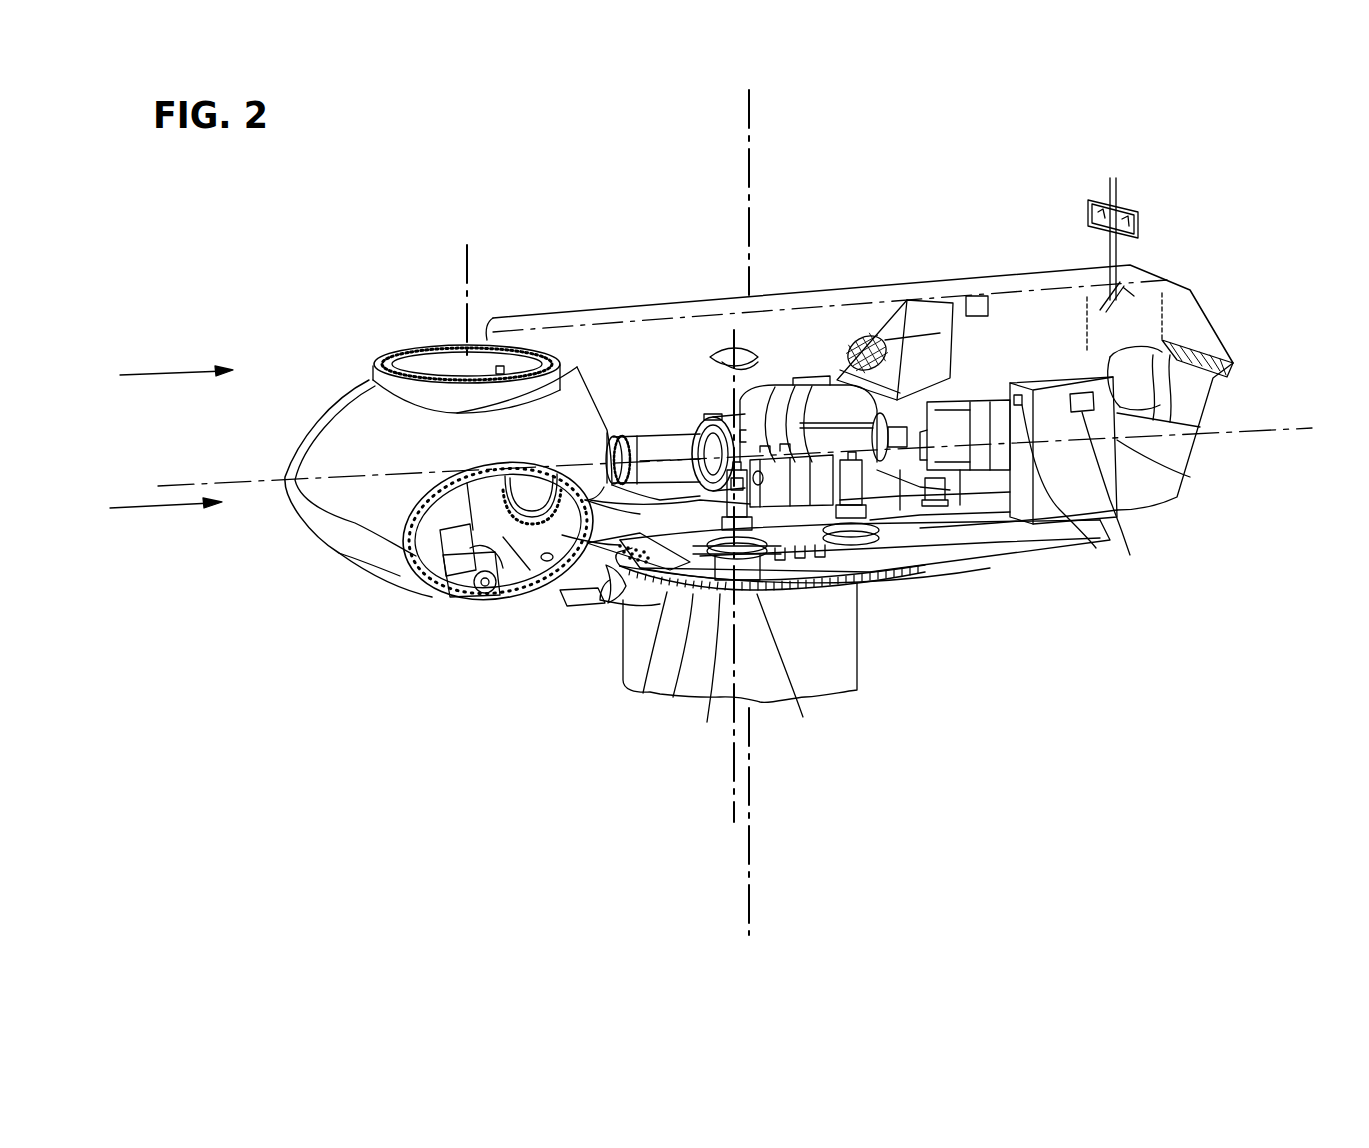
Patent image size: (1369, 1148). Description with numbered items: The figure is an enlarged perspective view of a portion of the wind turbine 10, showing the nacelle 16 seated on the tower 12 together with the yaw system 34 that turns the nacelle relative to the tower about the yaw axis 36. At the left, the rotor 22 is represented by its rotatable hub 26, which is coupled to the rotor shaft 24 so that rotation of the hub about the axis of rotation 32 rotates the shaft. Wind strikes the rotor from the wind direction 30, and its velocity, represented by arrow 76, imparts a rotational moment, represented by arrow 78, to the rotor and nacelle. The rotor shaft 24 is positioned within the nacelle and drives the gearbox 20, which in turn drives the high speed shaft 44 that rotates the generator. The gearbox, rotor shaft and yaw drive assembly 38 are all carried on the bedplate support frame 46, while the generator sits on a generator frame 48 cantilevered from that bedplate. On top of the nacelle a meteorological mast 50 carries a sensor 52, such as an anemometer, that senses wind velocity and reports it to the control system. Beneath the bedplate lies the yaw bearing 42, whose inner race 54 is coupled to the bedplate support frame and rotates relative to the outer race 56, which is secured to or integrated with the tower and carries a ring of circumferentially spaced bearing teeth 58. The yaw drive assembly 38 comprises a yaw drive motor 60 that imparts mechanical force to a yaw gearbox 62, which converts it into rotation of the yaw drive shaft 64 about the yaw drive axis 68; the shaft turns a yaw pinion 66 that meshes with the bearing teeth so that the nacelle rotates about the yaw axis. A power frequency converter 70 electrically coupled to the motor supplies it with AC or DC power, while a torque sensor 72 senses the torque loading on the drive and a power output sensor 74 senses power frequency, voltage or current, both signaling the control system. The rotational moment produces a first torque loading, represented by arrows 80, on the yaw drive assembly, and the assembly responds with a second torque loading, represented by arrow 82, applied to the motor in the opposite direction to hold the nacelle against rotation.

The wind turbine 10 is at (622, 242).
The tower 12 is at (862, 666).
The nacelle 16 is at (873, 292).
The gearbox 20 is at (812, 378).
The rotor 22 is at (318, 334).
The rotor shaft 24 is at (640, 428).
The hub 26 is at (356, 563).
The wind direction 30 is at (142, 374).
The axis of rotation 32 is at (1304, 408).
The yaw system 34 is at (640, 620).
The yaw axis 36 is at (751, 852).
The yaw drive assembly 38 is at (702, 538).
The yaw bearing 42 is at (840, 594).
The high speed shaft 44 is at (953, 320).
The bedplate support frame 46 is at (628, 600).
The generator frame 48 is at (1178, 478).
The meteorological mast 50 is at (1137, 182).
The sensor 52 is at (1140, 216).
The inner race 54 is at (664, 546).
The outer race 56 is at (680, 695).
The bearing teeth 58 is at (795, 600).
The yaw drive motor 60 is at (704, 484).
The yaw gearbox 62 is at (865, 580).
The yaw drive shaft 64 is at (652, 690).
The yaw pinion 66 is at (707, 722).
The yaw drive axis 68 is at (748, 766).
The power frequency converter 70 is at (1098, 484).
The torque sensor 72 is at (803, 717).
The power output sensor 74 is at (700, 450).
The wind velocity arrow 76 is at (132, 507).
The rotational moment arrow 78 is at (725, 138).
The first torque loading arrows 80 is at (748, 350).
The second torque loading arrow 82 is at (752, 364).